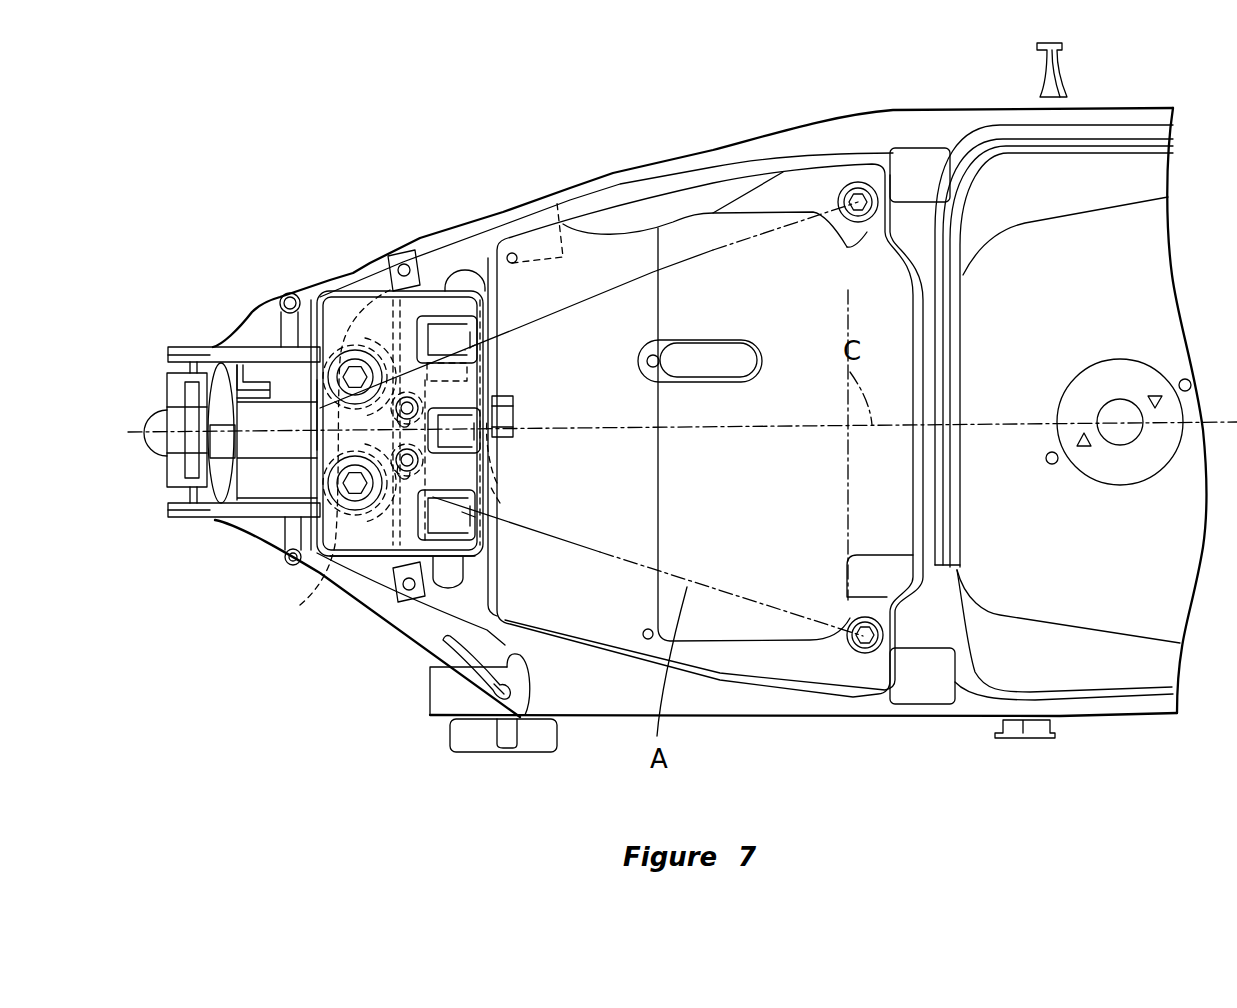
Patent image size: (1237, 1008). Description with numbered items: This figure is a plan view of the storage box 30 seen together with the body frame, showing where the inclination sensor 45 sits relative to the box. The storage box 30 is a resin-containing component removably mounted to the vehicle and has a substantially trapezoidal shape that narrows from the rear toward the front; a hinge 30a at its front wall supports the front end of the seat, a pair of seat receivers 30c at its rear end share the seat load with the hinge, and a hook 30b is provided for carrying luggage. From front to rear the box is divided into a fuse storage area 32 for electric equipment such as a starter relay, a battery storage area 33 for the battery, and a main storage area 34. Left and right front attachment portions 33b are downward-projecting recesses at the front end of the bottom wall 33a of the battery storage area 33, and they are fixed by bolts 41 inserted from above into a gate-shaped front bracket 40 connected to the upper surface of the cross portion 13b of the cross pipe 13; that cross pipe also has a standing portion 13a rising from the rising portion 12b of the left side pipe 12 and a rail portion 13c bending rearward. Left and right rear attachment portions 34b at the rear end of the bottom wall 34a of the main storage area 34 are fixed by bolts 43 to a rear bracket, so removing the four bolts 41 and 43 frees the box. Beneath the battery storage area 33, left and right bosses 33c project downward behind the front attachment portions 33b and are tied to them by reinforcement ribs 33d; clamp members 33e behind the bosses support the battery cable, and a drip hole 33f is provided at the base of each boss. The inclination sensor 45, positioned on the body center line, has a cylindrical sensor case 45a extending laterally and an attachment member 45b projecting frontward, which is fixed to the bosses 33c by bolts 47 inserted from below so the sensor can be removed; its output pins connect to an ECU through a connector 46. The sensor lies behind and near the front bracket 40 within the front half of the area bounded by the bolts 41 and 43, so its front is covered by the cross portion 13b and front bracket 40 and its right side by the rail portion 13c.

The left side pipe 12 is at (710, 722).
The rising portion 12b is at (590, 717).
The cross pipe 13 is at (420, 650).
The standing portion 13a is at (440, 660).
The cross portion 13b is at (326, 464).
The rail portion 13c is at (567, 262).
The storage box 30 is at (347, 272).
The hinge 30a is at (205, 347).
The hook 30b is at (160, 447).
The seat receiver 30c is at (925, 157).
The fuse storage area 32 is at (280, 395).
The battery storage area 33 is at (372, 300).
The bottom wall 33a is at (358, 556).
The front attachment portion 33b is at (320, 418).
The boss 33c is at (398, 437).
The reinforcement rib 33d is at (353, 363).
The clamp member 33e is at (483, 316).
The drip hole 33f is at (472, 430).
The main storage area 34 is at (704, 257).
The bottom wall 34a is at (900, 338).
The rear attachment portion 34b is at (847, 172).
The front bracket 40 is at (480, 472).
The bolt 41 is at (317, 305).
The bolt 43 is at (858, 215).
The inclination sensor 45 is at (497, 483).
The sensor case 45a is at (500, 503).
The attachment member 45b is at (475, 517).
The connector 46 is at (475, 345).
The bolt 47 is at (395, 410).